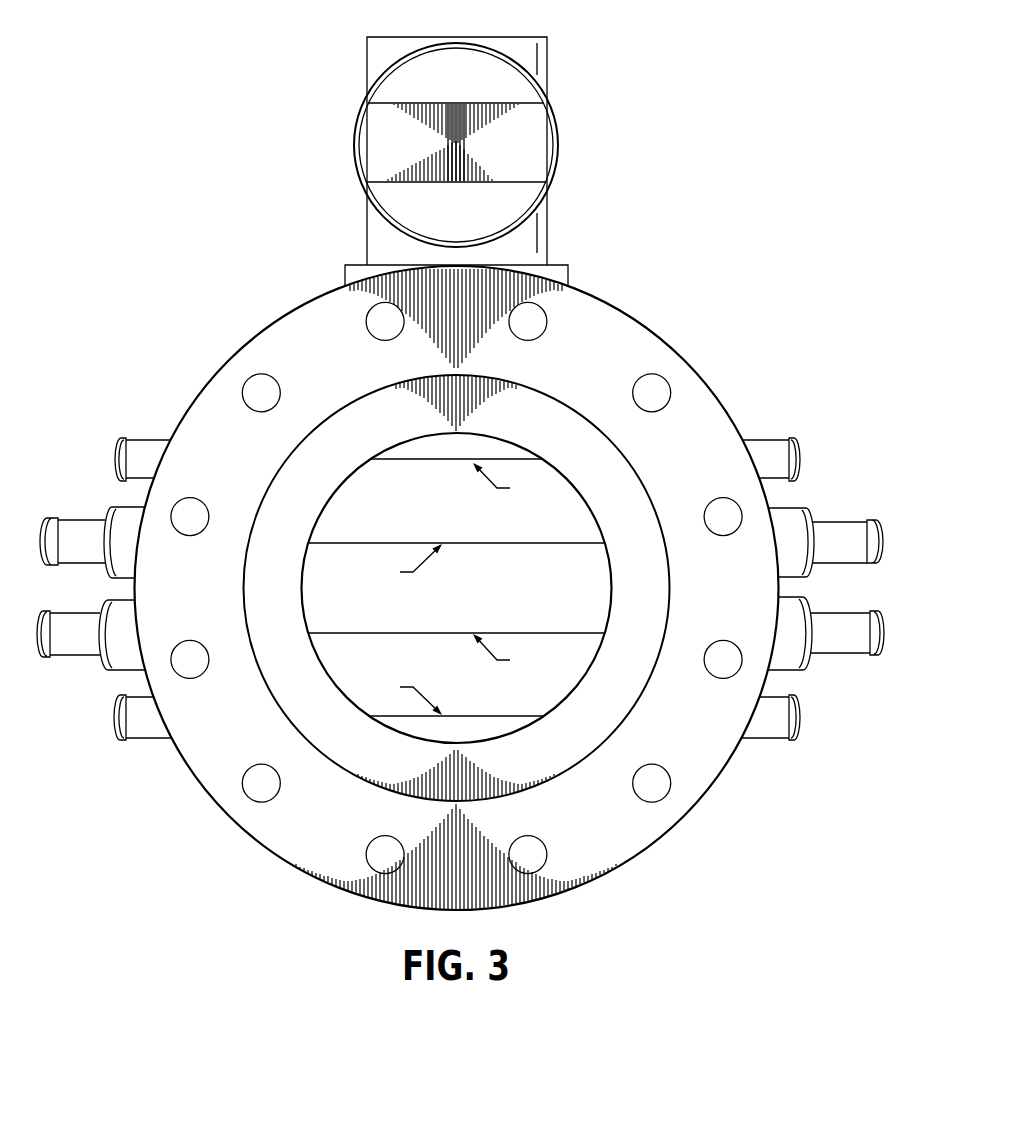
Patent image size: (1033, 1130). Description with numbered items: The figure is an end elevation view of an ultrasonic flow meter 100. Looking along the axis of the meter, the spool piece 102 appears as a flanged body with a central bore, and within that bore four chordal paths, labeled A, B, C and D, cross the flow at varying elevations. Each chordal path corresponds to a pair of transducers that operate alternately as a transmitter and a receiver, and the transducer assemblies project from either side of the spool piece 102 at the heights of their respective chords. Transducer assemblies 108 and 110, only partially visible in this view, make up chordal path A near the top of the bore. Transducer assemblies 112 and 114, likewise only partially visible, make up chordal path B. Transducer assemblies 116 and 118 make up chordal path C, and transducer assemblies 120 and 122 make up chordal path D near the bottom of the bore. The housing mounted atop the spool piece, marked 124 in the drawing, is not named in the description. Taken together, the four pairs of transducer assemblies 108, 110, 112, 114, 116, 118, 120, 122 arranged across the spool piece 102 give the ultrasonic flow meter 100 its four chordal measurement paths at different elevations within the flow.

The ultrasonic flow meter 100 is at (658, 72).
The spool piece 102 is at (241, 342).
The transducer assembly 108 is at (116, 459).
The transducer assembly 110 is at (798, 459).
The transducer assembly 112 is at (68, 520).
The transducer assembly 114 is at (844, 520).
The transducer assembly 116 is at (68, 656).
The transducer assembly 118 is at (844, 656).
The transducer assembly 120 is at (115, 718).
The transducer assembly 122 is at (798, 718).
The electronics housing 124 is at (352, 142).